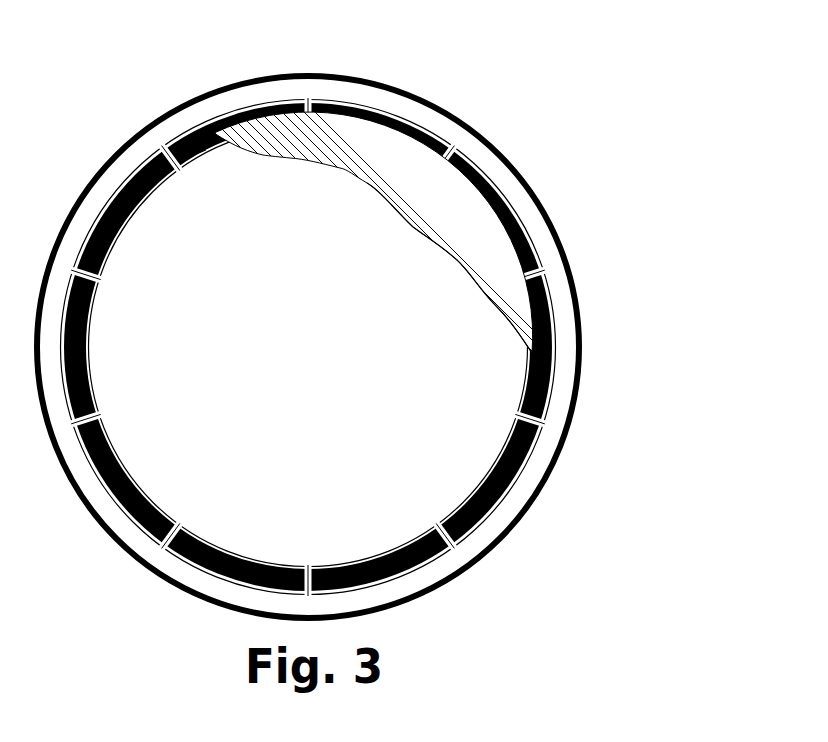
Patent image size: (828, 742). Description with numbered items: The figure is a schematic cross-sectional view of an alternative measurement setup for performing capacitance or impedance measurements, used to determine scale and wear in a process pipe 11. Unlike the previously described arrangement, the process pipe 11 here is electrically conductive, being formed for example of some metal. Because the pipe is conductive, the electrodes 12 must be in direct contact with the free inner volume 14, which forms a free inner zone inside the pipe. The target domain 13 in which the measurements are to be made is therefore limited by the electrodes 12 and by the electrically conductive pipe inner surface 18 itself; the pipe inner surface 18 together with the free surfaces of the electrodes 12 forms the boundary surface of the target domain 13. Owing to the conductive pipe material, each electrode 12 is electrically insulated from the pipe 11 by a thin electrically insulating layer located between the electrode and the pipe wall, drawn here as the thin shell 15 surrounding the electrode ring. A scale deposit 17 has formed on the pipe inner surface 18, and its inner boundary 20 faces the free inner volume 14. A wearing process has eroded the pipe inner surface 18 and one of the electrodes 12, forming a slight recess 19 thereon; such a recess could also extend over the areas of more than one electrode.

The process pipe 11 is at (390, 97).
The electrodes 12 is at (517, 217).
The target domain 13 is at (543, 427).
The free inner volume 14 is at (345, 365).
The thin shell 15 is at (547, 290).
The scale deposit 17 is at (373, 160).
The pipe inner surface 18 is at (473, 530).
The recess 19 is at (205, 145).
The boundary surface of filler 20 is at (433, 245).